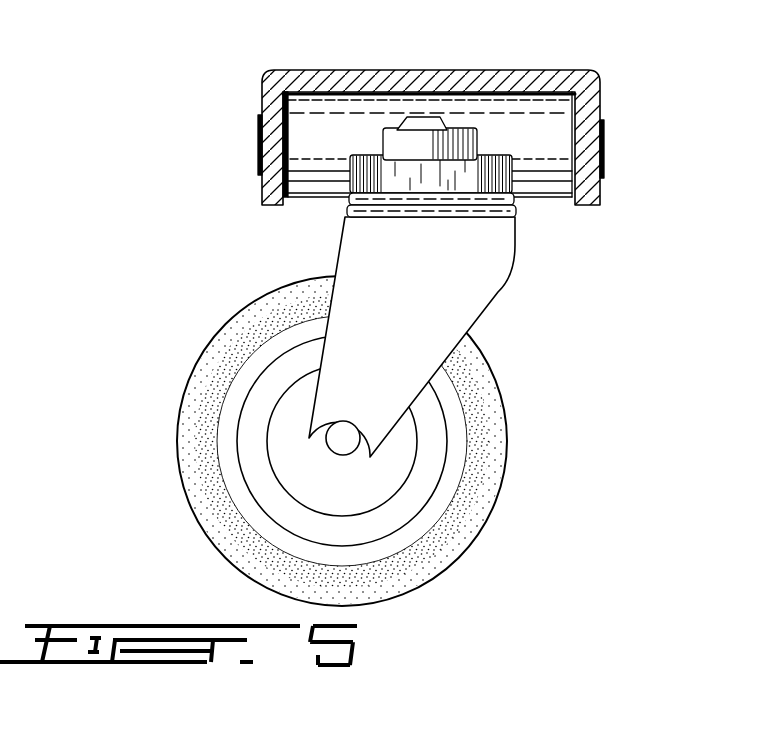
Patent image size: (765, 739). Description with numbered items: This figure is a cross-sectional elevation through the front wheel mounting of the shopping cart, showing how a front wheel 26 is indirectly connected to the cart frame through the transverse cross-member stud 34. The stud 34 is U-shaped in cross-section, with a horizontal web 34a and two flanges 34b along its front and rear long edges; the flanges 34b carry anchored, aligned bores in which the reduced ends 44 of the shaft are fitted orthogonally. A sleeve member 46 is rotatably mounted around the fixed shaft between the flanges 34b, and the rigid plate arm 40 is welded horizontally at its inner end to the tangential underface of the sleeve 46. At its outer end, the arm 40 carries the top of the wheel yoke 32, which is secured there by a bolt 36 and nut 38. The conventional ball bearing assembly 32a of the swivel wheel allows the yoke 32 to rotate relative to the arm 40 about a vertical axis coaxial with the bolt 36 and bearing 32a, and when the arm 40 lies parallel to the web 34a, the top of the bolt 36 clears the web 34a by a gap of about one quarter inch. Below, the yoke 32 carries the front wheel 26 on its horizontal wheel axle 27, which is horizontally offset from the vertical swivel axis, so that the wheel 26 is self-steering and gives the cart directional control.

The front wheel 26 is at (498, 443).
The horizontal wheel axle 27 is at (345, 432).
The yoke 32 is at (462, 283).
The ball bearing assembly 32a is at (357, 213).
The cross-member stud 34 is at (488, 8).
The horizontal web 34a is at (385, 78).
The flange 34b is at (268, 100).
The bolt 36 is at (443, 120).
The nut 38 is at (477, 133).
The arm 40 is at (370, 168).
The reduced end 44 is at (600, 155).
The sleeve member 46 is at (558, 167).